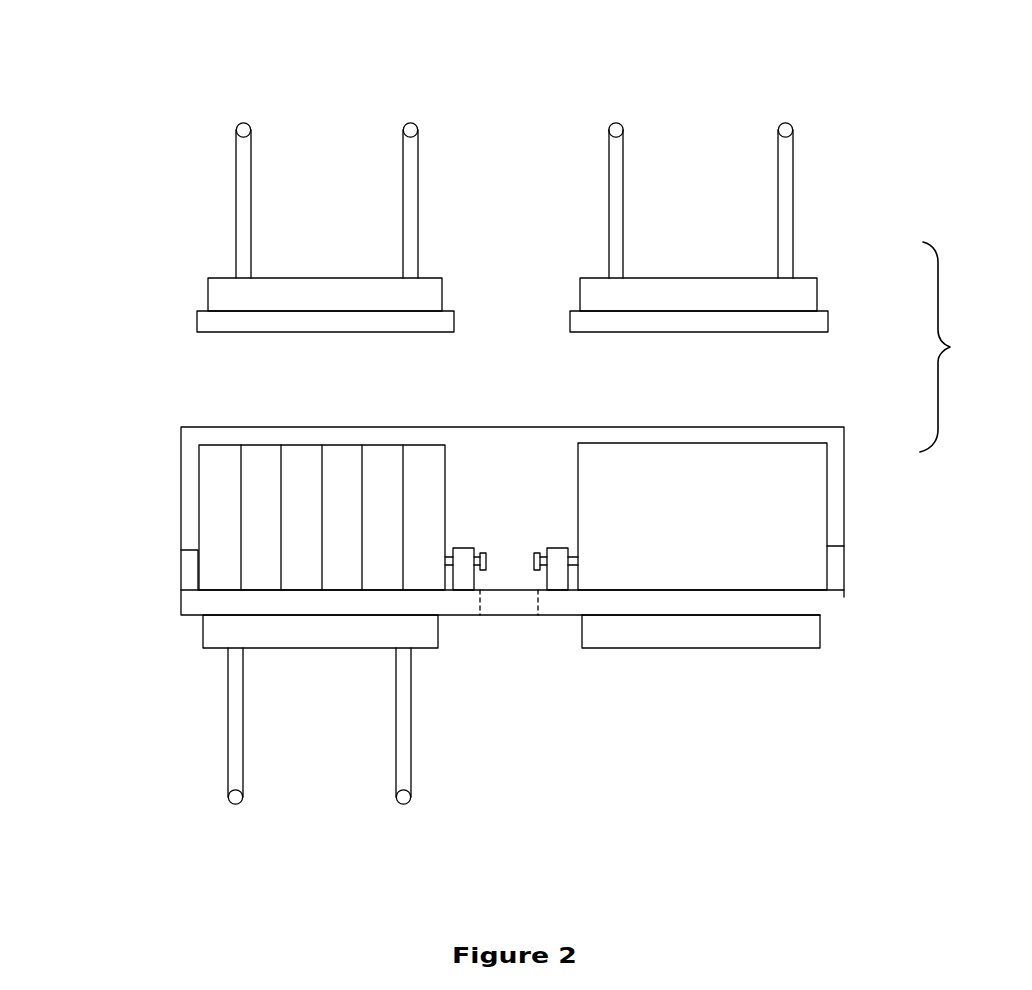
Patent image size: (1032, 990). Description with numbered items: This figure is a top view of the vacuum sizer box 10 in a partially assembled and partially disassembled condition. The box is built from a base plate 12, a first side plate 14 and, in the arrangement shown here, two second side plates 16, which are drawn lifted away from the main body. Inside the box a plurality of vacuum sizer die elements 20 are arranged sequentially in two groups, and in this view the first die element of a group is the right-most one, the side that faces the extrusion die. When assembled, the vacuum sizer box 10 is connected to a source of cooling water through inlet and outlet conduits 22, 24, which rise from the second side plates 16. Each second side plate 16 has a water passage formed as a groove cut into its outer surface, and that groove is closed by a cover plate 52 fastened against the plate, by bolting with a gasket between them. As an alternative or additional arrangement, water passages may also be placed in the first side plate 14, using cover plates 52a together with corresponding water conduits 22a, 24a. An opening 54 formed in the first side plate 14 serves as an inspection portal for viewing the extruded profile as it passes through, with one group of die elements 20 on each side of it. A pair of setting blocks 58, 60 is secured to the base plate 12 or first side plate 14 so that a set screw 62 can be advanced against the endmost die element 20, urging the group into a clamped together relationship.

The vacuum sizer box 10 is at (120, 393).
The base plate 12 is at (835, 486).
The first side plate 14 is at (830, 605).
The second side plate 16 is at (203, 323).
The vacuum sizer die elements 20 is at (355, 455).
The inlet and outlet conduits 22 is at (410, 122).
The inlet and outlet conduits 24 is at (244, 122).
The water conduits 22a is at (402, 760).
The water conduits 24a is at (232, 760).
The cover plate 52 is at (283, 283).
The cover plates 52a is at (373, 650).
The opening 54 is at (510, 615).
The setting block 58 is at (835, 567).
The setting block 60 is at (190, 572).
The set screw 62 is at (532, 560).